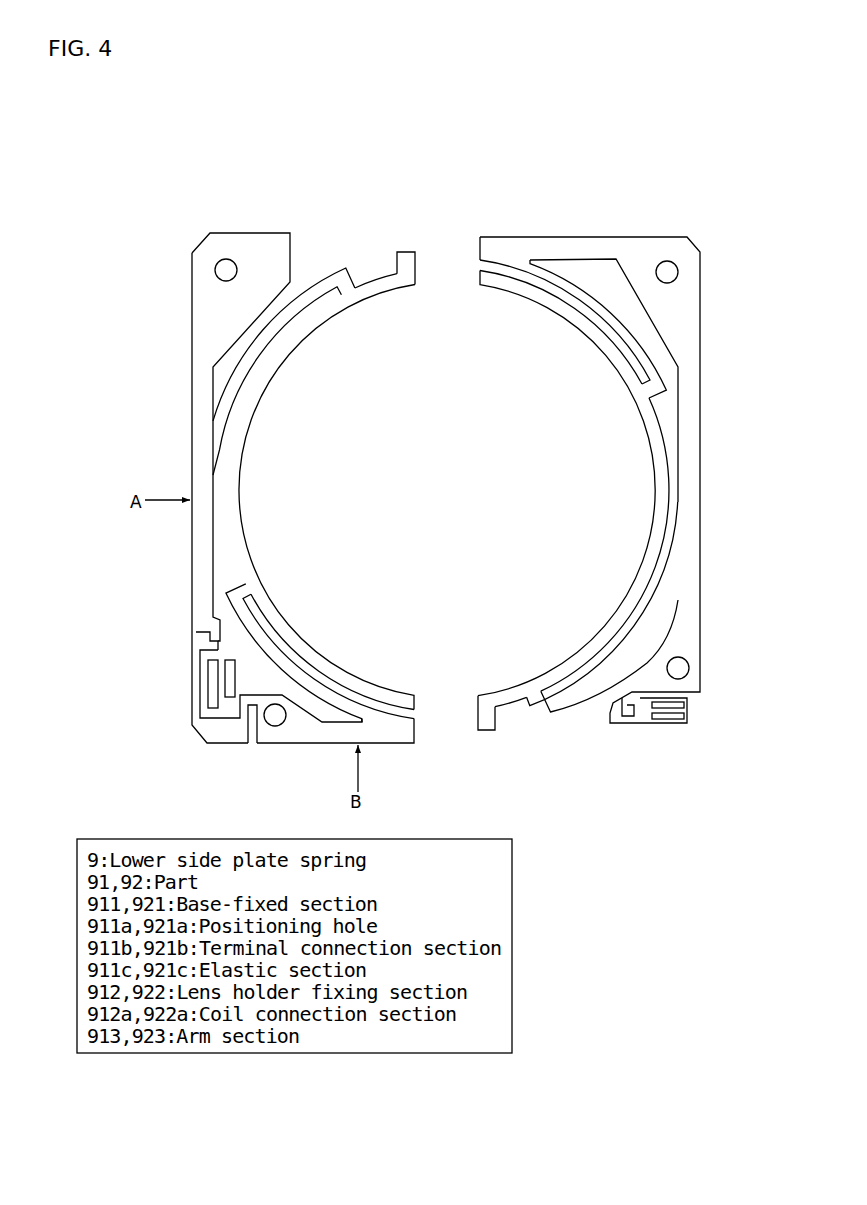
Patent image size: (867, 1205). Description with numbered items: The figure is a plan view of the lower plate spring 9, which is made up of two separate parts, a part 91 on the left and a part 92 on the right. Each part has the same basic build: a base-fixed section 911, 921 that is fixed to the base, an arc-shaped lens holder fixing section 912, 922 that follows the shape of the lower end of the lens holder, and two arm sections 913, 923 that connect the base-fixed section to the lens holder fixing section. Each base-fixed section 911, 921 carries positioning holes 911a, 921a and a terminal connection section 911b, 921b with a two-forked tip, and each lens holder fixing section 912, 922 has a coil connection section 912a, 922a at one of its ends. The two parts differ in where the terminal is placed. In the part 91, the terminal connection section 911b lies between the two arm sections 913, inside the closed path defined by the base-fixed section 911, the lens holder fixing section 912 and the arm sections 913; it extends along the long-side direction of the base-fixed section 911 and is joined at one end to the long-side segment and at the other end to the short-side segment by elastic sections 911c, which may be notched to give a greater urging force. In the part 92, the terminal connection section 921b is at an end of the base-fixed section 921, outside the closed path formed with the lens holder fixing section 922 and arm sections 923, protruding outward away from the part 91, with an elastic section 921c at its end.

The lower plate spring 9 is at (160, 158).
The part 91 is at (204, 240).
The part 92 is at (700, 240).
The base-fixed section 911 is at (205, 326).
The base-fixed section 921 is at (700, 405).
The positioning holes 911a is at (226, 262).
The positioning holes 921a is at (666, 262).
The terminal connection section 911b is at (212, 690).
The terminal connection section 921b is at (677, 716).
The elastic sections 911c is at (197, 648).
The elastic section 921c is at (618, 708).
The lens holder fixing section 912 is at (235, 468).
The lens holder fixing section 922 is at (665, 482).
The coil connection section 912a is at (407, 262).
The coil connection section 922a is at (490, 722).
The arm sections 913 is at (312, 288).
The arm sections 923 is at (567, 283).